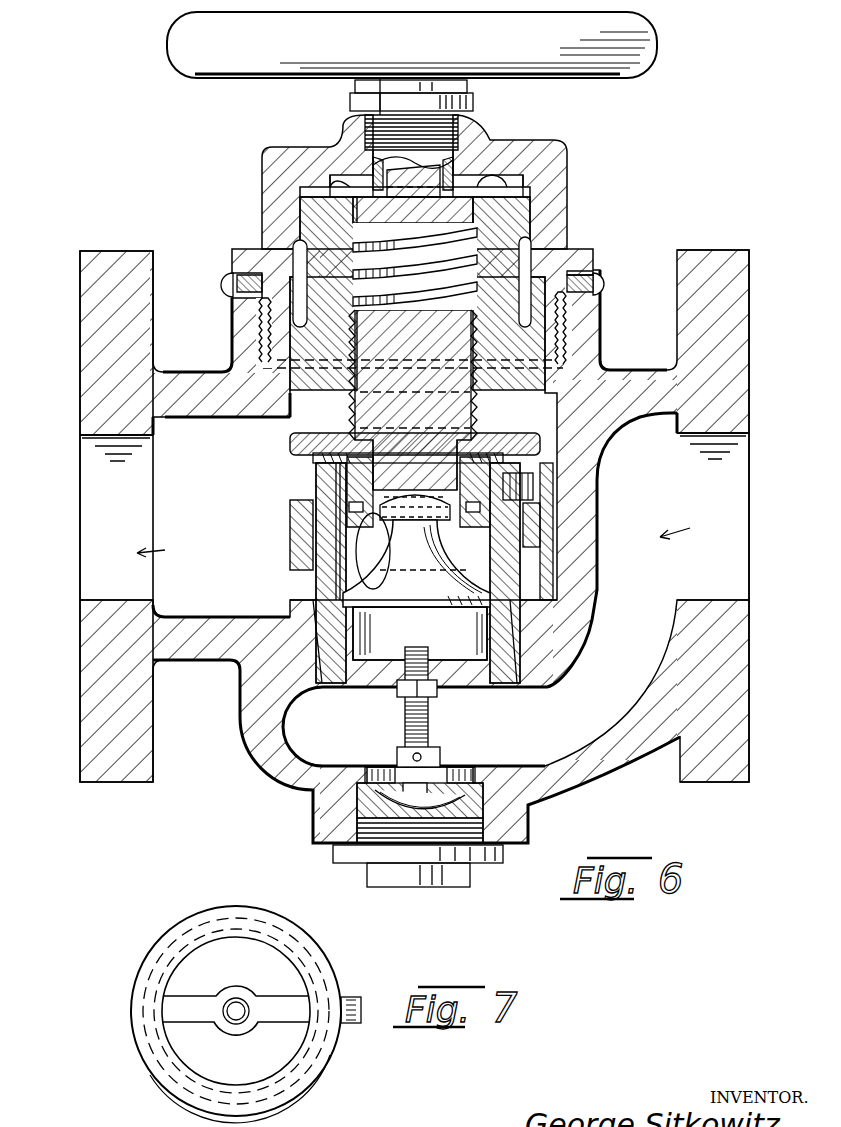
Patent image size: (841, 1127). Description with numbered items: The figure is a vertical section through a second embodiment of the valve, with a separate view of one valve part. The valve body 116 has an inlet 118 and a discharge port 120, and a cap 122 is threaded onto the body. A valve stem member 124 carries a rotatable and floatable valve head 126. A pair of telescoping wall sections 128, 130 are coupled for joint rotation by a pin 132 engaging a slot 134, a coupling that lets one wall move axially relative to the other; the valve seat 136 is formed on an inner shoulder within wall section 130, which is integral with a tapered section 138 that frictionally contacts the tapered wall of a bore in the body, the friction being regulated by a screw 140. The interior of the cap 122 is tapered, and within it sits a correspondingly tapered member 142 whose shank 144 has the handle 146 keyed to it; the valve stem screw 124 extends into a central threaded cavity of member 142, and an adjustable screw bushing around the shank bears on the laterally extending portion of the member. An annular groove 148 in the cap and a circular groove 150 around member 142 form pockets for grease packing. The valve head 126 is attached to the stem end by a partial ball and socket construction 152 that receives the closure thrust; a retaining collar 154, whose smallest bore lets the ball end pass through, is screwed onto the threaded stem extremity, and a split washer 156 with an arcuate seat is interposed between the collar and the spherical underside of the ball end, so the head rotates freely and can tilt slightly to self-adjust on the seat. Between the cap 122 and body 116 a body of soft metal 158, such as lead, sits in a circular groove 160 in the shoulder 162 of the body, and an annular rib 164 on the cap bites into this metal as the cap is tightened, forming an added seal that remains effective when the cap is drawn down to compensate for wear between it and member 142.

In FIG. 6, the valve body 116 is at (240, 752).
In FIG. 6, the inlet 118 is at (738, 497).
In FIG. 6, the discharge port 120 is at (92, 555).
In FIG. 6, the cap 122 is at (262, 150).
In FIG. 6, the valve stem member 124 is at (385, 400).
In FIG. 6, the valve head 126 is at (433, 604).
In FIG. 6, the telescoping wall section 128 is at (293, 537).
In FIG. 6, the telescoping wall section 130 is at (315, 492).
In FIG. 7, the telescoping wall section 130 is at (180, 927).
In FIG. 6, the pin 132 is at (535, 485).
In FIG. 7, the pin 132 is at (343, 995).
In FIG. 6, the slot 134 is at (535, 523).
In FIG. 6, the valve seat 136 is at (320, 606).
In FIG. 6, the tapered section 138 is at (507, 643).
In FIG. 6, the screw 140 is at (432, 726).
In FIG. 6, the tapered member 142 is at (300, 215).
In FIG. 6, the shank 144 is at (357, 90).
In FIG. 6, the handle 146 is at (640, 62).
In FIG. 6, the annular groove 148 is at (490, 183).
In FIG. 6, the circular groove 150 is at (298, 257).
In FIG. 6, the partial ball and socket construction 152 is at (423, 500).
In FIG. 6, the retaining collar 154 is at (452, 512).
In FIG. 6, the split washer 156 is at (383, 553).
In FIG. 6, the body of soft metal 158 is at (600, 300).
In FIG. 6, the circular groove 160 is at (604, 287).
In FIG. 6, the shoulder 162 is at (585, 282).
In FIG. 6, the annular rib 164 is at (585, 270).